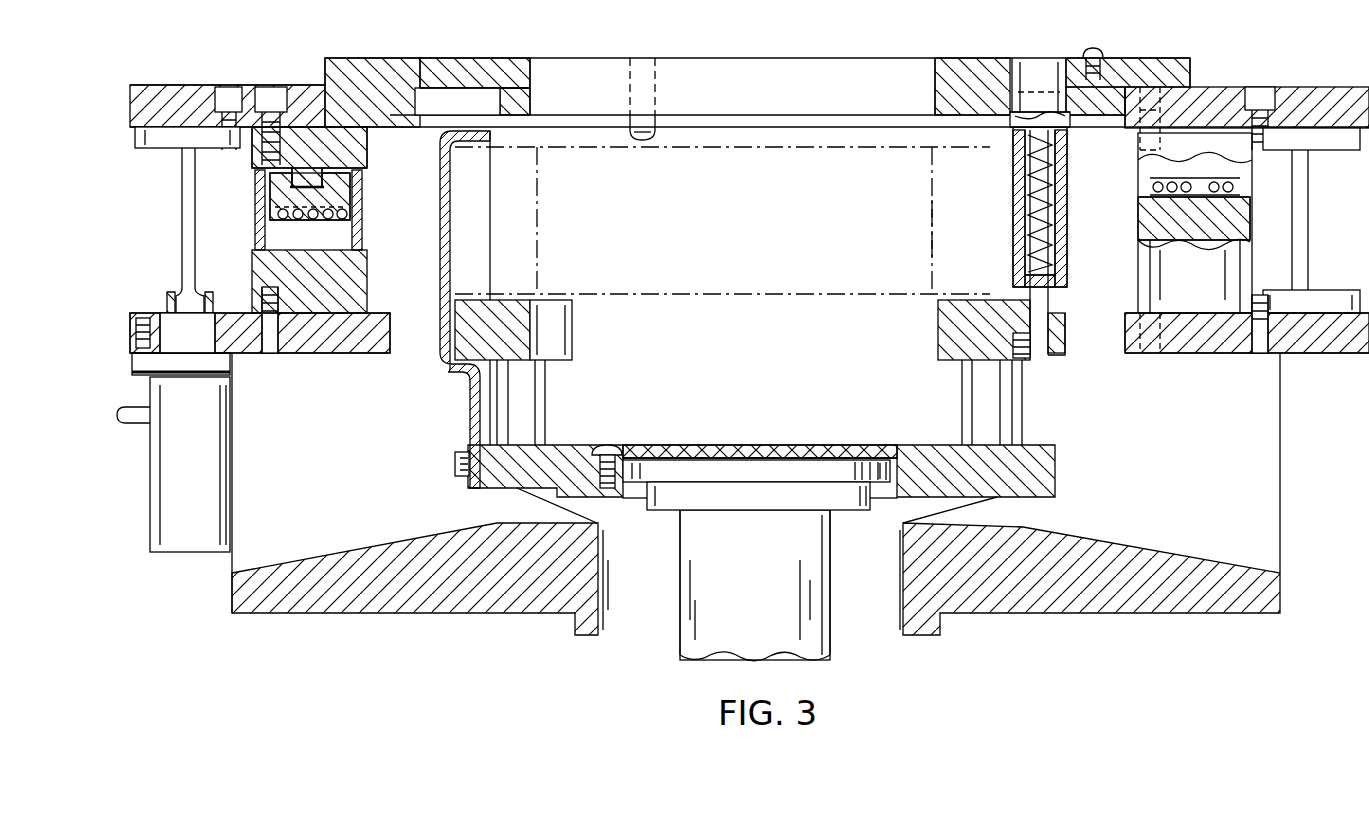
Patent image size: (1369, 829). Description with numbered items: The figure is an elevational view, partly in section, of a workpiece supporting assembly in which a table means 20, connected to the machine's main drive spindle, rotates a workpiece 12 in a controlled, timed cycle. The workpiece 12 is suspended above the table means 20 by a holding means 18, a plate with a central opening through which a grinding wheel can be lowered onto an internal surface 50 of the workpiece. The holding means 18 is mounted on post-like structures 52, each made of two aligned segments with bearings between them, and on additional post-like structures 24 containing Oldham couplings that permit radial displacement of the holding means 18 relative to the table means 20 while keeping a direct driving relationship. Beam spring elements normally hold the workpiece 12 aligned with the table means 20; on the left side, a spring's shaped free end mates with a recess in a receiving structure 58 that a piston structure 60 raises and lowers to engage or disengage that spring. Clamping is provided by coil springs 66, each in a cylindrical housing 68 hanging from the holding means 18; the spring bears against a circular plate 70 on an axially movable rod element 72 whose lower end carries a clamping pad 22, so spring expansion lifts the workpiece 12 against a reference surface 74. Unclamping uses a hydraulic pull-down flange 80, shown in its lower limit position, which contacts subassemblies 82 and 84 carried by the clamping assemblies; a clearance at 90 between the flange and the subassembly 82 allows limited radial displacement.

The workpiece 12 is at (786, 292).
The holding means 18 is at (1220, 86).
The table means 20 is at (1280, 456).
The clamping pad 22 is at (486, 300).
The post-like structure 24 is at (364, 218).
The internal surface 50 is at (946, 222).
The post-like structure 52 is at (1136, 220).
The receiving structure 58 is at (176, 294).
The piston structure 60 is at (165, 305).
The coil spring 66 is at (1058, 188).
The cylindrical housing 68 is at (1068, 164).
The circular plate 70 is at (1068, 142).
The rod element 72 is at (1050, 253).
The reference surface 74 is at (733, 118).
The pull-down flange 80 is at (755, 470).
The subassembly 82 is at (928, 445).
The subassembly 84 is at (548, 404).
The clearance 90 is at (892, 462).